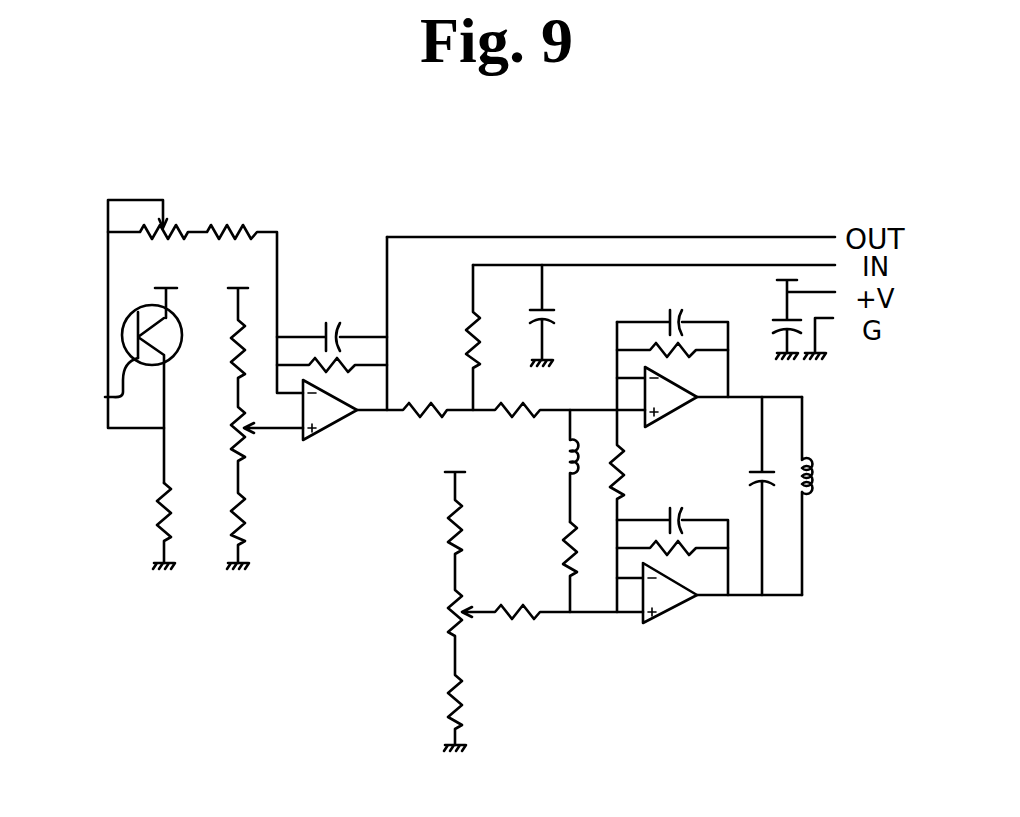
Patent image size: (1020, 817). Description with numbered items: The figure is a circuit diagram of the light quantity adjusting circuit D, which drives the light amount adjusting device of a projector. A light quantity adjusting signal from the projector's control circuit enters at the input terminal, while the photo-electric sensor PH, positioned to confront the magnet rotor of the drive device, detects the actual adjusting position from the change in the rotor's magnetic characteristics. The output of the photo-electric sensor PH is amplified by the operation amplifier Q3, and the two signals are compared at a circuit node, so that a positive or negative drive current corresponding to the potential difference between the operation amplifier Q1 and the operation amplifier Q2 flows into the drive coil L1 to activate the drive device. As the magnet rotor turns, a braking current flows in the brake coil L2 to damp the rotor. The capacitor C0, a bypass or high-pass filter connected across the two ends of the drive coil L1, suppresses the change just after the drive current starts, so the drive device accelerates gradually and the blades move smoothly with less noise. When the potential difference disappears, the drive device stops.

The photo-electric sensor PH is at (105, 397).
The operation amplifier Q3 is at (340, 413).
The operation amplifier Q1 is at (668, 398).
The operation amplifier Q2 is at (668, 600).
The drive coil L1 is at (818, 480).
The brake coil L2 is at (558, 463).
The capacitor C0 is at (748, 479).
The light quantity adjusting circuit D is at (305, 598).